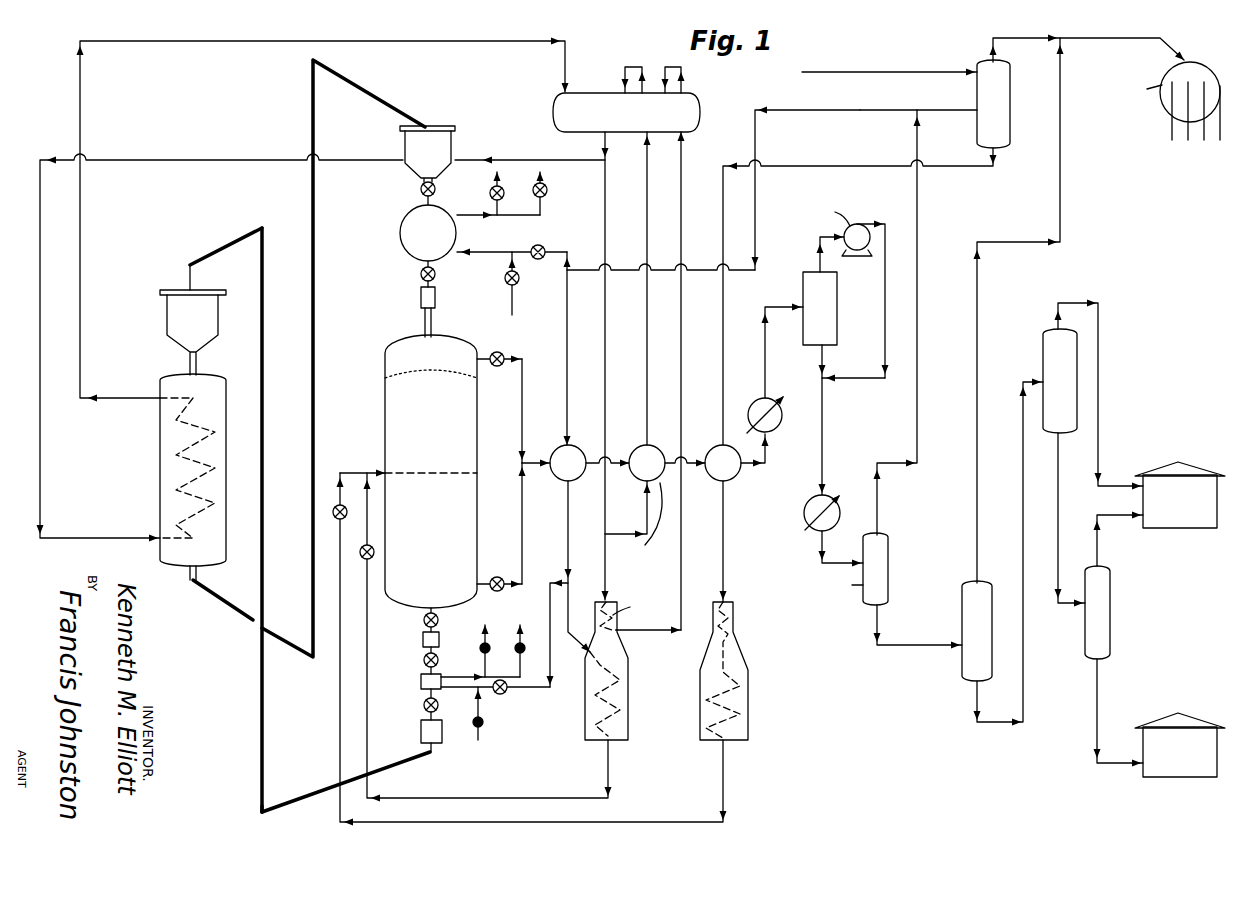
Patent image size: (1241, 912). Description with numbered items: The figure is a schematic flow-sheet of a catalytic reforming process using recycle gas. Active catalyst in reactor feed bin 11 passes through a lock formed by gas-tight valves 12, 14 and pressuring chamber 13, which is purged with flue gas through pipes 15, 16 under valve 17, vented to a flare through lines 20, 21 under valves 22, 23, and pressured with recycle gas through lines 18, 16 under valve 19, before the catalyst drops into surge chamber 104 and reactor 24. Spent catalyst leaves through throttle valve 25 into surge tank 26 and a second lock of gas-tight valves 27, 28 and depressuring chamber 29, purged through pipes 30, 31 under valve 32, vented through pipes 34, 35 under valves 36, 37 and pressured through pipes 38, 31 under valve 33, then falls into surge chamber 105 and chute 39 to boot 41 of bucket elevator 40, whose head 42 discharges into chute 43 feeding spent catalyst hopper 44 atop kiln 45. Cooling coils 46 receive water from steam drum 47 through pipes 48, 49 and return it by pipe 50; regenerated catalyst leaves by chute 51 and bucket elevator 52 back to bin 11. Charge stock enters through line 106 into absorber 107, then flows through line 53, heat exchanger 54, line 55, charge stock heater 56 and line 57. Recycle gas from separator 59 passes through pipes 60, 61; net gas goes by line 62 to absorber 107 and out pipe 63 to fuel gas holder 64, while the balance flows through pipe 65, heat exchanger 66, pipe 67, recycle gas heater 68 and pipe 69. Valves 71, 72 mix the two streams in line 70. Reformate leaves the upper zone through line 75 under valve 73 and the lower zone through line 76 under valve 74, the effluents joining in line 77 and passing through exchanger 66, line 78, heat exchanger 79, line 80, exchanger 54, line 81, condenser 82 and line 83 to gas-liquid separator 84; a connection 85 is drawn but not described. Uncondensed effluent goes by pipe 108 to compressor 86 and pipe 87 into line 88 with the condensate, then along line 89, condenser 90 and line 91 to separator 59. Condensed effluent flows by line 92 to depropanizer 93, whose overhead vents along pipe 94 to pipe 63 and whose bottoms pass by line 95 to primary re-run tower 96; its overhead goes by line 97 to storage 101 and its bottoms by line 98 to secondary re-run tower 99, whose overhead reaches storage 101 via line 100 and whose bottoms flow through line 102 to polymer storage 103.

The reactor feed bin 11 is at (427, 154).
The gas-tight valve 12 is at (420, 189).
The pressuring chamber 13 is at (399, 233).
The gas-tight valve 14 is at (420, 274).
The surge chamber 104 is at (420, 298).
The pipe 15 is at (506, 270).
The pipe 16 is at (488, 252).
The valve 17 is at (505, 285).
The line 18 is at (566, 250).
The valve 19 is at (540, 245).
The line 20 is at (474, 214).
The line 21 is at (543, 213).
The valve 22 is at (547, 190).
The valve 23 is at (500, 188).
The reactor 24 is at (431, 471).
The throttle valve 25 is at (423, 620).
The surge tank 26 is at (422, 640).
The gas-tight valve 27 is at (423, 660).
The gas-tight valve 28 is at (423, 705).
The depressuring chamber 29 is at (420, 683).
The surge chamber 105 is at (420, 733).
The pipe 30 is at (482, 742).
The pipe 31 is at (448, 690).
The valve 32 is at (474, 728).
The valve 33 is at (498, 694).
The pipe 34 is at (467, 676).
The pipe 35 is at (518, 660).
The valve 36 is at (516, 643).
The valve 37 is at (480, 644).
The pipe 38 is at (540, 690).
The chute 39 is at (314, 794).
The elevator 40 is at (264, 456).
The boot 41 is at (260, 812).
The elevator head 42 is at (258, 225).
The chute 43 is at (222, 248).
The spent catalyst hopper 44 is at (193, 332).
The kiln 45 is at (160, 485).
The cooling coils 46 is at (176, 422).
The steam drum 47 is at (700, 97).
The pipe 48 is at (600, 145).
The pipe 49 is at (212, 158).
The pipe 50 is at (82, 282).
The chute 51 is at (222, 604).
The bucket elevator 52 is at (310, 300).
The line 53 is at (958, 165).
The heat exchanger 54 is at (723, 463).
The line 55 is at (727, 555).
The charge stock heater 56 is at (750, 720).
The line 57 is at (338, 686).
The separator 59 is at (888, 558).
The pipe 60 is at (920, 288).
The pipe 61 is at (805, 110).
The line 62 is at (950, 110).
The pipe 63 is at (1075, 40).
The fuel gas holder 64 is at (1202, 66).
The pipe 65 is at (565, 300).
The heat exchanger 66 is at (568, 463).
The pipe 67 is at (565, 548).
The recycle gas heater 68 is at (630, 700).
The pipe 69 is at (522, 797).
The line 70 is at (372, 470).
The valve 71 is at (363, 560).
The valve 72 is at (345, 516).
The valve 73 is at (510, 352).
The valve 74 is at (506, 575).
The line 75 is at (524, 383).
The line 76 is at (524, 518).
The line 77 is at (533, 457).
The line 78 is at (617, 458).
The heat exchanger 79 is at (647, 306).
The line 80 is at (673, 458).
The line 81 is at (756, 466).
The condenser 82 is at (755, 401).
The line 83 is at (763, 328).
The gas-liquid separator 84 is at (838, 320).
The line 85 is at (617, 533).
The compressor 86 is at (852, 253).
The pipe 87 is at (883, 295).
The line 88 is at (826, 366).
The line 89 is at (825, 428).
The condenser 90 is at (804, 510).
The line 91 is at (833, 562).
The line 92 is at (895, 648).
The depropanizer 93 is at (960, 608).
The pipe 94 is at (1063, 190).
The line 95 is at (993, 724).
The primary re-run tower 96 is at (1042, 355).
The line 97 is at (1101, 388).
The line 98 is at (1056, 483).
The secondary re-run tower 99 is at (1100, 610).
The line 100 is at (1097, 517).
The storage 101 is at (1176, 515).
The line 102 is at (1095, 738).
The polymer storage 103 is at (1180, 756).
The line 106 is at (865, 73).
The absorber 107 is at (1000, 123).
The pipe 108 is at (818, 256).